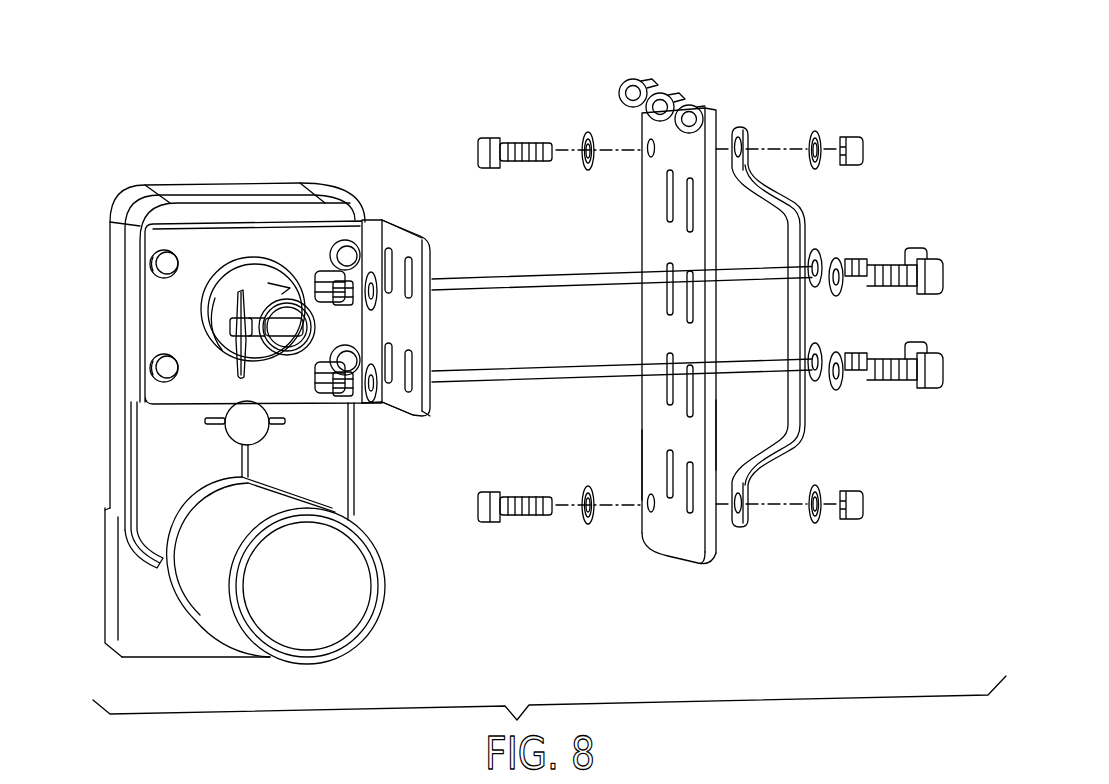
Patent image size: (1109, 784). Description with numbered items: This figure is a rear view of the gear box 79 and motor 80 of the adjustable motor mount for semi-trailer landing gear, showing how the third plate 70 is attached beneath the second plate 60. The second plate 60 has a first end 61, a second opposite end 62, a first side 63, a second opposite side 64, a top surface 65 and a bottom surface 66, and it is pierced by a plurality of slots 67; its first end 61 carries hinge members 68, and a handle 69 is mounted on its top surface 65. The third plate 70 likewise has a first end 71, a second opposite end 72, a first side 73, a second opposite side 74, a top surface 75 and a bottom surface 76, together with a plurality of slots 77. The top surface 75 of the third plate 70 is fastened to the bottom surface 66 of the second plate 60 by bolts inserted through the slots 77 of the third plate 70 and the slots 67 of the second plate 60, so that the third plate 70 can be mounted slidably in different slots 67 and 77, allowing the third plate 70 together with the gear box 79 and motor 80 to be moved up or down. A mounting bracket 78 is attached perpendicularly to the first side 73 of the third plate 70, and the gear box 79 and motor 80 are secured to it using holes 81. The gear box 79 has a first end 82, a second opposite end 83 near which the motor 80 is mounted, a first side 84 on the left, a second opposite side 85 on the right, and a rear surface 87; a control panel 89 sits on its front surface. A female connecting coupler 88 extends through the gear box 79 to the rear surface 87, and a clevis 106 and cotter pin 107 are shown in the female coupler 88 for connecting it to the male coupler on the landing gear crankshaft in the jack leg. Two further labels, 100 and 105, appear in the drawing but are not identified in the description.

The second plate 60 is at (652, 258).
The first end 61 is at (708, 112).
The second opposite end 62 is at (672, 553).
The first side 63 is at (641, 440).
The second opposite side 64 is at (716, 405).
The top surface 65 is at (724, 345).
The bottom surface 66 is at (656, 342).
The slots 67 is at (665, 190).
The hinge members 68 is at (620, 82).
The handle 69 is at (800, 228).
The third plate 70 is at (403, 243).
The first end 71 is at (388, 222).
The second opposite end 72 is at (405, 422).
The first side 73 is at (364, 314).
The second opposite side 74 is at (432, 398).
The top surface 75 is at (446, 326).
The bottom surface 76 is at (412, 335).
The slots 77 is at (412, 275).
The mounting bracket 78 is at (262, 228).
The gear box 79 is at (312, 210).
The motor 80 is at (220, 617).
The holes 81 is at (148, 265).
The first end 82 is at (270, 186).
The second opposite end 83 is at (163, 672).
The first side 84 is at (354, 486).
The second opposite side 85 is at (116, 463).
The rear surface 87 is at (323, 480).
The female connecting coupler 88 is at (230, 313).
The control panel 89 is at (128, 598).
The assembly 100 is at (549, 730).
The collar ring 105 is at (252, 260).
The clevis 106 is at (291, 333).
The cotter pin 107 is at (190, 358).